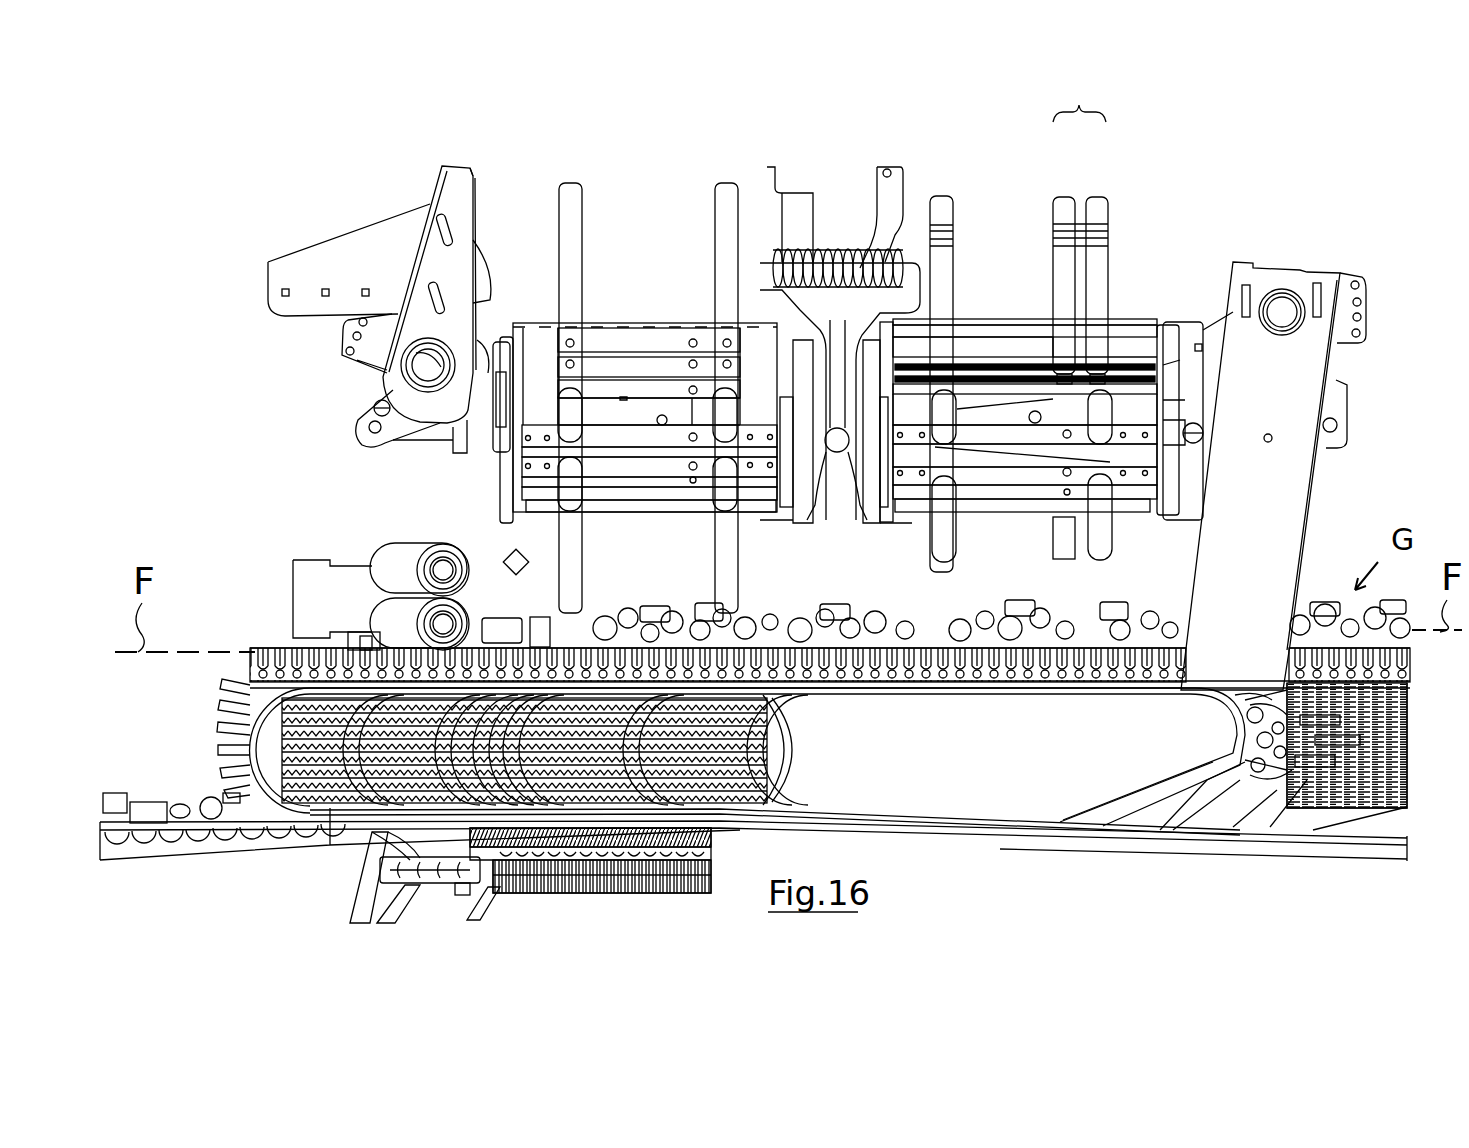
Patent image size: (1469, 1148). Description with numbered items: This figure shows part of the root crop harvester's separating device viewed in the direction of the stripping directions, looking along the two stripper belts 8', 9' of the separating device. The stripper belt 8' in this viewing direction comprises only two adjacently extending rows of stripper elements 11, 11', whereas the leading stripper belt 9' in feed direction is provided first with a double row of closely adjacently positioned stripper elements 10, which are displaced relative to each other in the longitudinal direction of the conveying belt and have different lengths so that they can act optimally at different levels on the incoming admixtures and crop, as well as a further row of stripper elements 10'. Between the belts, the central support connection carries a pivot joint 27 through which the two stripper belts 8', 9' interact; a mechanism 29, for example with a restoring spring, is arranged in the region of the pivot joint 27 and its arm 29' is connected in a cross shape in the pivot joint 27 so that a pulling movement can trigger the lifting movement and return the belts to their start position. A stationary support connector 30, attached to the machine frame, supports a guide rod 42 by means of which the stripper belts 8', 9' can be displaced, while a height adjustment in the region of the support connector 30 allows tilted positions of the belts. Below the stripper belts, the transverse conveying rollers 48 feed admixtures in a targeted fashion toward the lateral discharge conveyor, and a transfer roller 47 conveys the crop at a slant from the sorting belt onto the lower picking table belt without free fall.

The stripper belt 8' is at (638, 363).
The stripper belt 9' is at (1029, 359).
The stripper elements 10 is at (1115, 312).
The stripper elements 10' is at (956, 340).
The stripper elements 11 is at (739, 359).
The stripper elements 11' is at (589, 360).
The pivot joint 27 is at (838, 452).
The mechanism 29 is at (835, 210).
The arm 29' is at (887, 180).
The stationary support connector 30 is at (1282, 540).
The guide rod 42 is at (1285, 312).
The transfer roller 47 is at (457, 847).
The transverse conveying rollers 48 is at (388, 618).